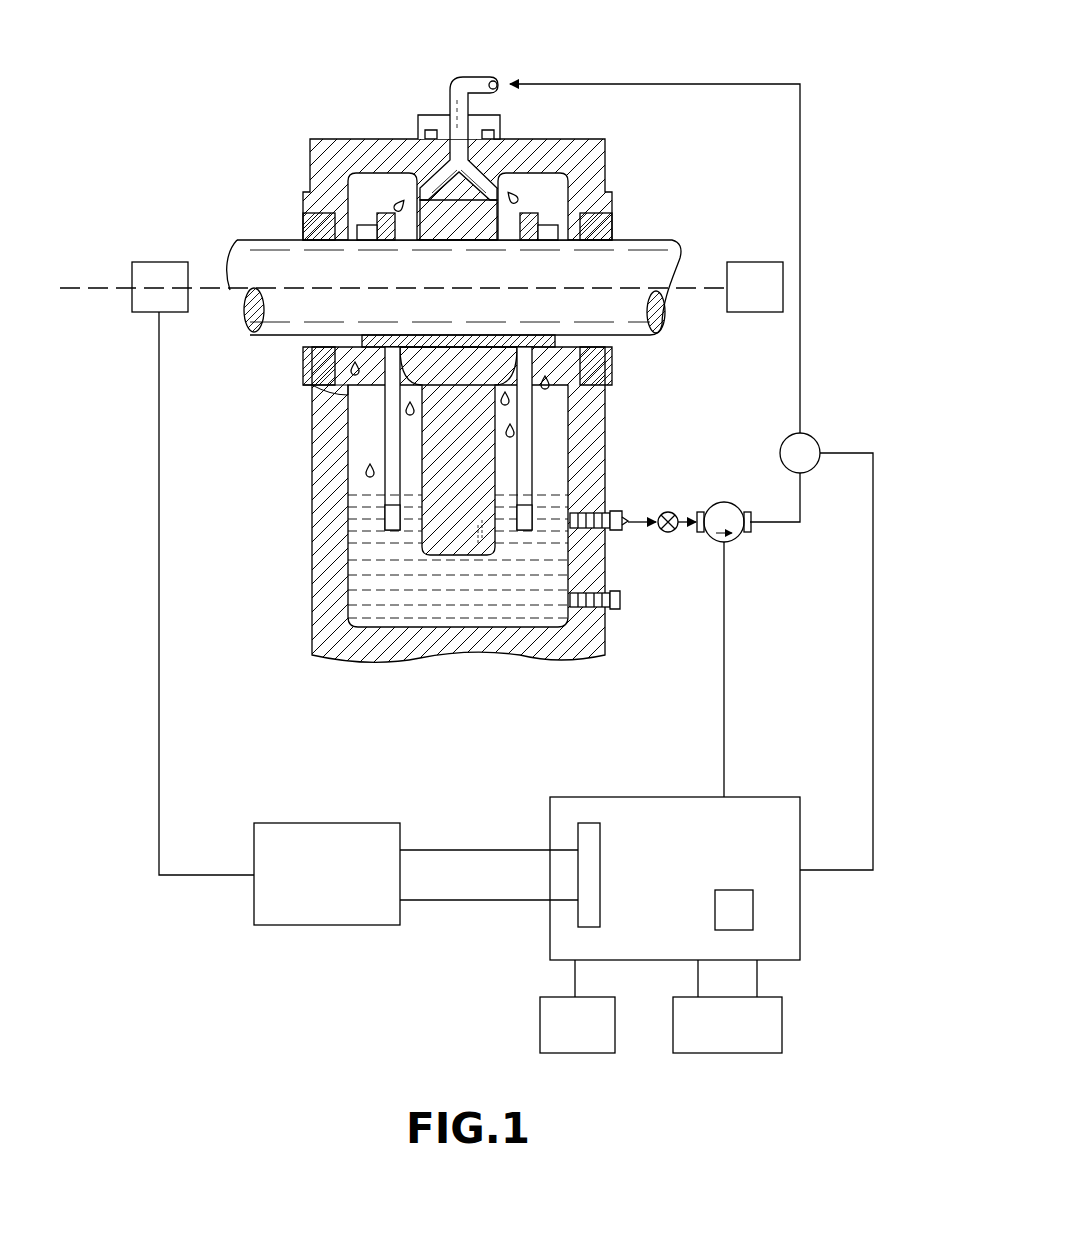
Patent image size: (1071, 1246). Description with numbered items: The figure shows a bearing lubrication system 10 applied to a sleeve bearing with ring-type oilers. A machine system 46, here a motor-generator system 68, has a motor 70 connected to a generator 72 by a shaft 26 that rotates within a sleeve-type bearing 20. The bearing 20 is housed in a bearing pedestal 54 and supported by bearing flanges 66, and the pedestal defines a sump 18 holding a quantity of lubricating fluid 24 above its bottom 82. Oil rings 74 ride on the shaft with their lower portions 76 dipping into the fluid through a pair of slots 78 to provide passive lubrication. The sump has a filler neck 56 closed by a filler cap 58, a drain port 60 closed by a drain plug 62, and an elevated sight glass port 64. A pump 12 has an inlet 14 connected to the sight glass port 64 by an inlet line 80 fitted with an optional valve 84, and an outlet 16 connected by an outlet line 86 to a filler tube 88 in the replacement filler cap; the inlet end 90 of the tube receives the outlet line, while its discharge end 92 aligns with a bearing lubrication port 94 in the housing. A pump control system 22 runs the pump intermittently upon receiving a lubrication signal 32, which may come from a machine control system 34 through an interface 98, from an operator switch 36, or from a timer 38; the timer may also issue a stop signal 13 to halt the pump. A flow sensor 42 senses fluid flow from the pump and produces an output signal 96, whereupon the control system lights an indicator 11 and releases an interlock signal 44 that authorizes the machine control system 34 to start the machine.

The bearing lubrication system 10 is at (205, 72).
The indicator 11 is at (715, 913).
The pump 12 is at (727, 492).
The stop signal 13 is at (757, 978).
The inlet 14 is at (700, 535).
The outlet 16 is at (748, 533).
The sump 18 is at (345, 635).
The bearing 20 is at (400, 385).
The pump control system 22 is at (578, 797).
The lubricating fluid 24 is at (525, 470).
The shaft 26 is at (258, 222).
The lubrication signal 32 is at (486, 848).
The machine control system 34 is at (322, 935).
The switch 36 is at (540, 1025).
The timer 38 is at (782, 1028).
The flow sensor 42 is at (786, 420).
The interlock signal 44 is at (454, 900).
The machine system 46 is at (126, 288).
The bearing pedestal 54 is at (345, 130).
The filler neck 56 is at (418, 130).
The filler cap 58 is at (430, 115).
The drain port 60 is at (570, 600).
The drain plug 62 is at (620, 609).
The sight glass port 64 is at (572, 525).
The bearing flanges 66 is at (385, 440).
The motor-generator system 68 is at (162, 250).
The motor 70 is at (150, 315).
The generator 72 is at (735, 312).
The oil rings 74 is at (532, 405).
The lower portions 76 is at (545, 505).
The slots 78 is at (380, 222).
The inlet line 80 is at (625, 530).
The bottom 82 is at (458, 616).
The valve 84 is at (668, 512).
The outlet line 86 is at (800, 328).
The filler tube 88 is at (500, 68).
The inlet end 90 is at (500, 95).
The discharge end 92 is at (500, 150).
The bearing lubrication port 94 is at (508, 194).
The output signal 96 is at (873, 712).
The interface 98 is at (600, 908).